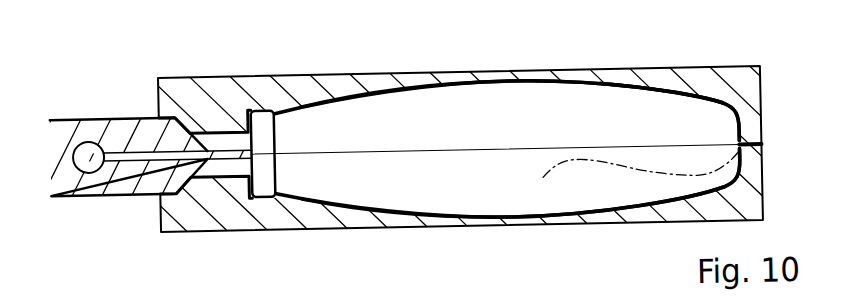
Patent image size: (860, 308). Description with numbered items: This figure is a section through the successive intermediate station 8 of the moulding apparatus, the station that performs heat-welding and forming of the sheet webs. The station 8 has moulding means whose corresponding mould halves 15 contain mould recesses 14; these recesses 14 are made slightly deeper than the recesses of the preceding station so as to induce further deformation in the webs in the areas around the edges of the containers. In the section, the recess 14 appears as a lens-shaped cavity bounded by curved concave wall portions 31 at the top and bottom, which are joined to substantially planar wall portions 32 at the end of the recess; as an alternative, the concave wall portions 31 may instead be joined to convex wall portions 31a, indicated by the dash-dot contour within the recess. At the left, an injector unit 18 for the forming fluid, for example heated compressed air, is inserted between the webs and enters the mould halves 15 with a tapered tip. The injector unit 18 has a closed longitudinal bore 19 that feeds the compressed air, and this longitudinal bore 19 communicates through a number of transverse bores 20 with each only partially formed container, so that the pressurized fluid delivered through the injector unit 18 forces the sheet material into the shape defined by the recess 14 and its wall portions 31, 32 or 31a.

The successive intermediate station 8 is at (342, 236).
The mould recess 14 is at (536, 81).
The mould half 15 is at (658, 93).
The injector unit 18 is at (98, 98).
The closed longitudinal bore 19 is at (76, 146).
The transverse bore 20 is at (136, 152).
The concave wall portion 31 is at (468, 87).
The convex wall portion 31a is at (575, 186).
The substantially planar wall portion 32 is at (692, 98).